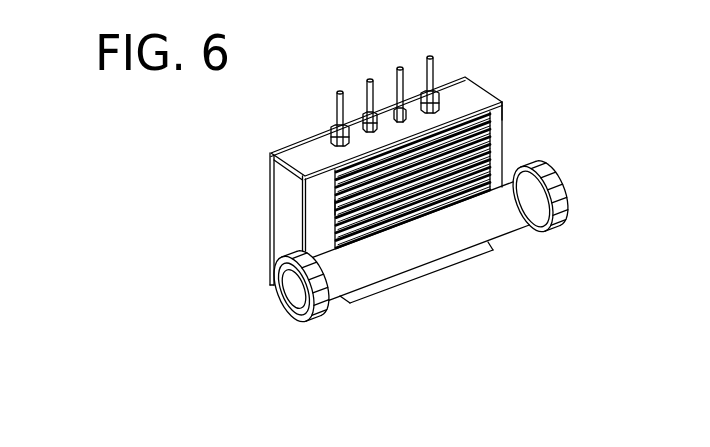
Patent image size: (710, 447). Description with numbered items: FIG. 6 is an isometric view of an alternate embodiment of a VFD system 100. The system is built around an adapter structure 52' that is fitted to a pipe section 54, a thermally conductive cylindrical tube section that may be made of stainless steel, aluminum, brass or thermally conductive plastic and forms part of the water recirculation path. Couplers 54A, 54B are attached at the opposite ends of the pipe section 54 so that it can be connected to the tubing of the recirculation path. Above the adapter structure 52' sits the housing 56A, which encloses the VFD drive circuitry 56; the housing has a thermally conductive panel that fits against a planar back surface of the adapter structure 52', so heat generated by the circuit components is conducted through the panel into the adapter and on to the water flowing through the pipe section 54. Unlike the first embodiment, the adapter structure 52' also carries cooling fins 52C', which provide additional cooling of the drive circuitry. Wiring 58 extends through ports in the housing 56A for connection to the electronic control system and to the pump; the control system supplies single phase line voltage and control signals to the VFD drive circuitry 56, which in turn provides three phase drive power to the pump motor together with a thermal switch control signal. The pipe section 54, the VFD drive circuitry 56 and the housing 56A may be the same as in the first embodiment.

The VFD system 100 is at (550, 126).
The wiring 58 is at (437, 45).
The adapter structure 52' is at (466, 157).
The cooling fins 52C' is at (247, 238).
The VFD drive circuitry 56 is at (259, 151).
The housing 56A is at (283, 238).
The pipe section 54 is at (430, 250).
The coupler 54A is at (322, 315).
The coupler 54B is at (562, 223).